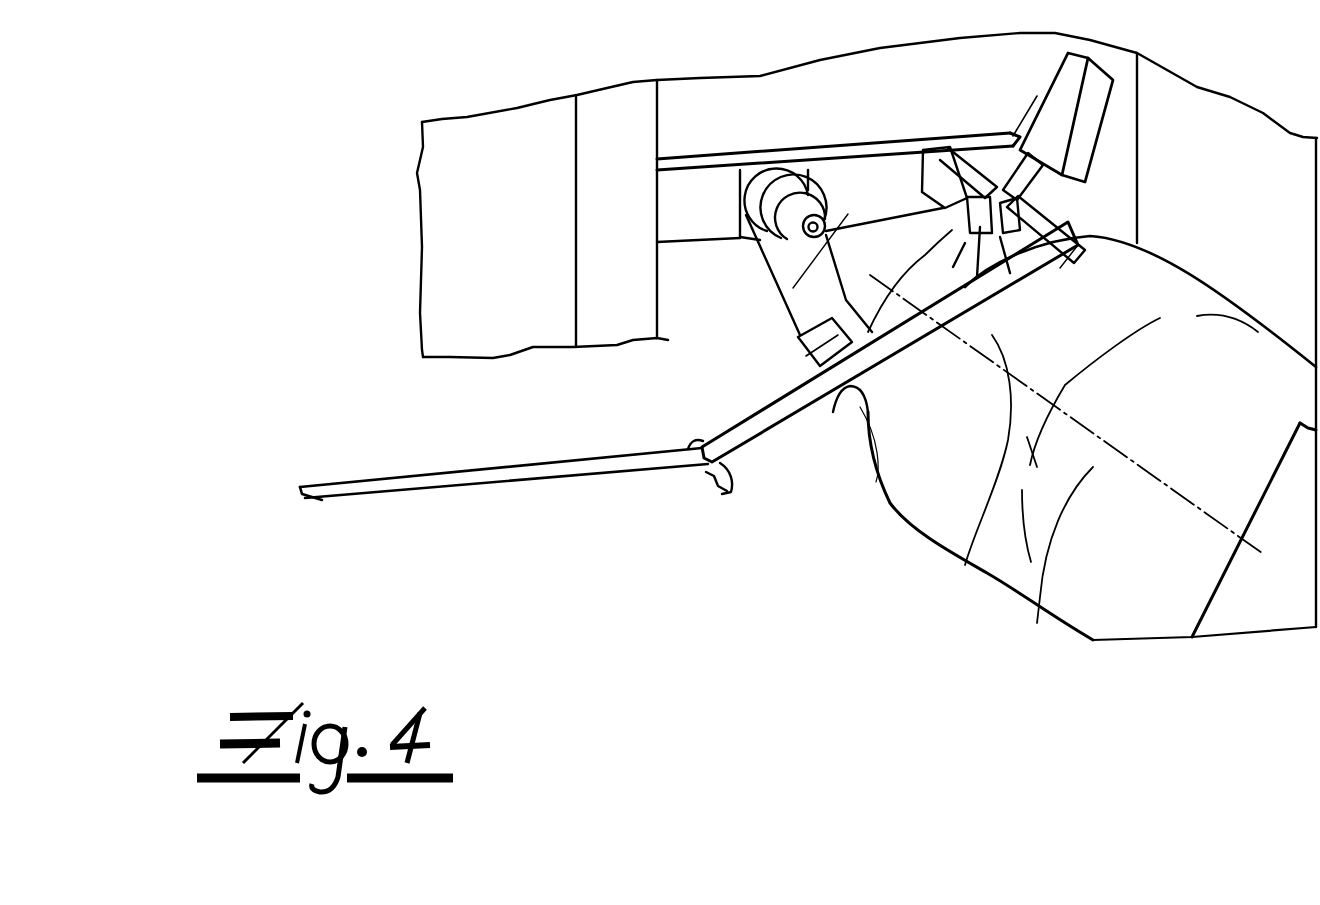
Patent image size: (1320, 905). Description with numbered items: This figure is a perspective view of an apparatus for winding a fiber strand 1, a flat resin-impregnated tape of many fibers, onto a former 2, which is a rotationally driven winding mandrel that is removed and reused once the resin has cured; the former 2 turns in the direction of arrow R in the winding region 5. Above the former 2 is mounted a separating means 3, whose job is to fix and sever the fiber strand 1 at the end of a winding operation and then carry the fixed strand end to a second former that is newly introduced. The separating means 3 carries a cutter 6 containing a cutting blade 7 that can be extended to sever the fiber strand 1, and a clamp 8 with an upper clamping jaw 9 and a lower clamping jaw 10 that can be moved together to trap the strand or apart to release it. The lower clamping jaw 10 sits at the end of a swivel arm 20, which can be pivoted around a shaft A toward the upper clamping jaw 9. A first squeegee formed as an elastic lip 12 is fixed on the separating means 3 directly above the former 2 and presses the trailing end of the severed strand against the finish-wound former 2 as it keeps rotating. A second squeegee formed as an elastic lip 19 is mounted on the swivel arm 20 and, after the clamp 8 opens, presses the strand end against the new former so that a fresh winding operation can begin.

The fiber strand 1 is at (373, 487).
The former 2 is at (1090, 637).
The separating means 3 is at (1102, 180).
The winding region 5 is at (972, 352).
The cutter 6 is at (997, 163).
The cutting blade 7 is at (1060, 325).
The clamp 8 is at (757, 337).
The upper clamping jaw 9 is at (950, 325).
The lower clamping jaw 10 is at (833, 411).
The elastic lip 12 is at (1087, 258).
The elastic lip 19 is at (802, 372).
The swivel arm 20 is at (836, 236).
The shaft A is at (763, 153).
The arrow R is at (962, 596).